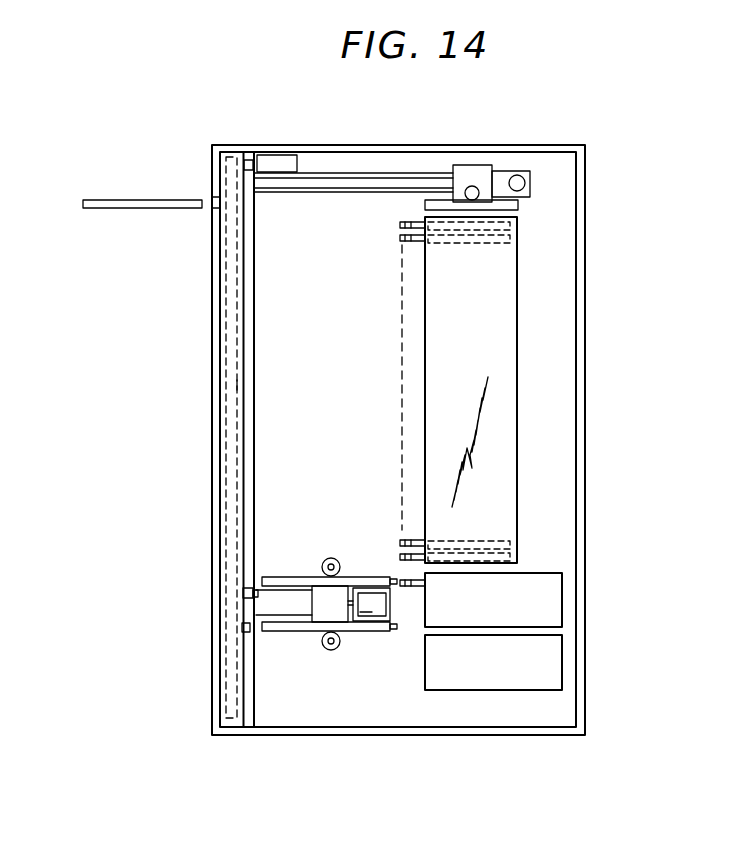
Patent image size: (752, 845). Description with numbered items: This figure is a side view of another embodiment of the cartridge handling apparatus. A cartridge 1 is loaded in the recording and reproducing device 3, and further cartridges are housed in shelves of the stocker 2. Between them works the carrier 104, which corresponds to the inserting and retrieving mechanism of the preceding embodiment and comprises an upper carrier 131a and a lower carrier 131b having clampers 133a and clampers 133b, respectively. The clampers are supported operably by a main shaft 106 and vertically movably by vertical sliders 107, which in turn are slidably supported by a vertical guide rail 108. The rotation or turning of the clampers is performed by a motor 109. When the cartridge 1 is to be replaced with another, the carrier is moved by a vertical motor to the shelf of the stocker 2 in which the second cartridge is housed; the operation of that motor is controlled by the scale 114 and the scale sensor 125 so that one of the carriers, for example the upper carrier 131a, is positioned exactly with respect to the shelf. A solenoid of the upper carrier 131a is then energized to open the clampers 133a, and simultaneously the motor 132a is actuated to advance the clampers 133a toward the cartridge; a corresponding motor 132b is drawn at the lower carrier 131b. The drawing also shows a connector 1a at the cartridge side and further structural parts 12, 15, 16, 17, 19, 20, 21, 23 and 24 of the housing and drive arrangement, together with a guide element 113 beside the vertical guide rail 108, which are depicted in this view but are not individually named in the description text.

The cartridge 1 is at (134, 200).
The head connector 1a is at (413, 587).
The stocker 2 is at (510, 417).
The recording and reproducing device 3 is at (555, 660).
The drive motor 12 is at (290, 160).
The support plate 15 is at (520, 205).
The guide rails 16 is at (410, 172).
The bearing block 17 is at (487, 170).
The pulley 19 is at (526, 180).
The mounting notch 20 is at (212, 204).
The roller 21 is at (472, 186).
The frame top 23 is at (278, 145).
The housing frame 24 is at (211, 690).
The carrier 104 is at (300, 639).
The main shaft 106 is at (283, 608).
The vertical sliders 107 is at (232, 384).
The vertical guide rail 108 is at (244, 626).
The motor 109 is at (364, 612).
The guide groove 113 is at (234, 296).
The scale 114 is at (253, 348).
The scale sensor 125 is at (244, 591).
The upper carrier 131a is at (264, 578).
The lower carrier 131b is at (287, 632).
The motor 132a is at (331, 560).
The lower roller 132b is at (330, 650).
The clampers 133a is at (397, 600).
The clampers 133b is at (397, 633).